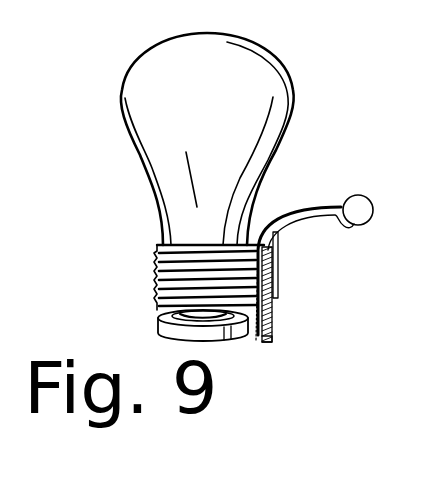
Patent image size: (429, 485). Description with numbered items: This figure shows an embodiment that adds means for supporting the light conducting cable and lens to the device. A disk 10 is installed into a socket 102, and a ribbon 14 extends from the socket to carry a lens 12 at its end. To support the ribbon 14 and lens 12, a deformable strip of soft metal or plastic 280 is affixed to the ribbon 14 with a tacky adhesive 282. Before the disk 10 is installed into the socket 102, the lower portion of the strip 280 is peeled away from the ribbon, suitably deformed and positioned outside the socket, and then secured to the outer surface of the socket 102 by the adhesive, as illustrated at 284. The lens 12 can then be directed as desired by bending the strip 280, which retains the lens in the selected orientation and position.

The disk 10 is at (228, 337).
The lens 12 is at (357, 203).
The ribbon 14 is at (288, 207).
The socket 102 is at (266, 340).
The deformable strip of soft metal or plastic 280 is at (279, 262).
The tacky adhesive 282 is at (266, 233).
The adhesive securement to socket 284 is at (282, 288).